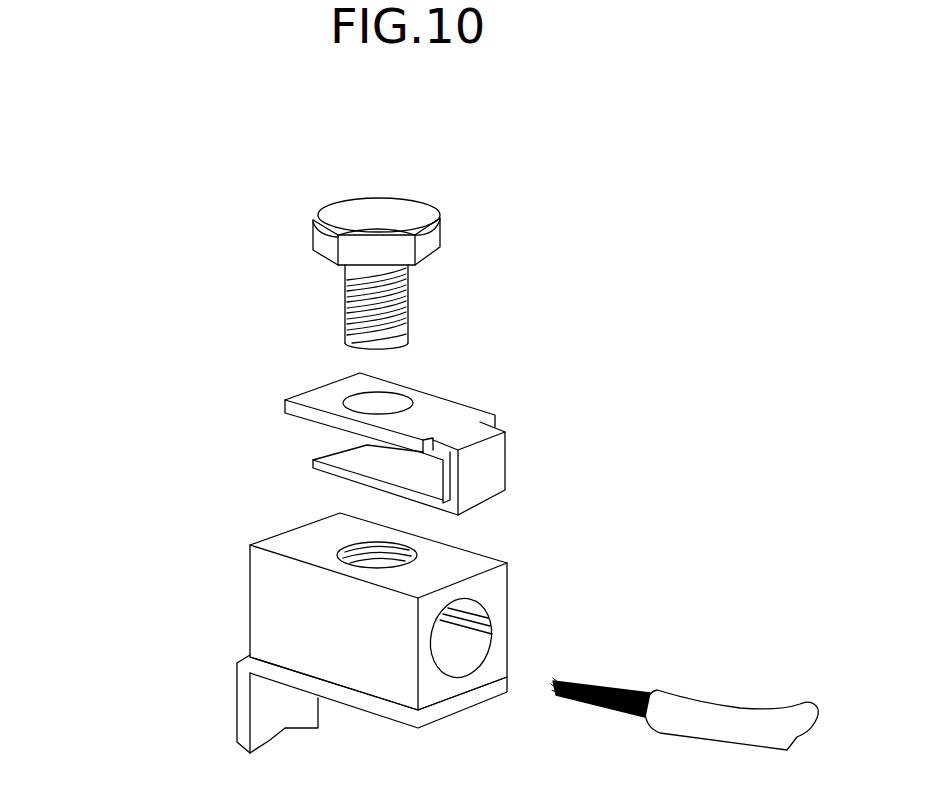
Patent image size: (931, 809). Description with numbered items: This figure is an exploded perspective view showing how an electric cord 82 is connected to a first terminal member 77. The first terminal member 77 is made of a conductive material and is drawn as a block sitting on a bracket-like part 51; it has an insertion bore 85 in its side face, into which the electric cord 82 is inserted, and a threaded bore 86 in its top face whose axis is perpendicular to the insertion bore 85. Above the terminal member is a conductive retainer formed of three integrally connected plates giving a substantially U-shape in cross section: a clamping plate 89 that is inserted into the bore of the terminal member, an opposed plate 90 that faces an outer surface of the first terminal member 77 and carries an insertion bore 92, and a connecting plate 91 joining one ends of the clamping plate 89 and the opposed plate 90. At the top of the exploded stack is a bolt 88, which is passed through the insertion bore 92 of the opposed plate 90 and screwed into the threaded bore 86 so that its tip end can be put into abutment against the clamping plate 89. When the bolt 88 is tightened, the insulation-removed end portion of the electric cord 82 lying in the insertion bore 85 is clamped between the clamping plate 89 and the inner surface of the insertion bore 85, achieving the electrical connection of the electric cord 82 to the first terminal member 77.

The bolt 88 is at (385, 208).
The opposed plate 90 is at (452, 410).
The insertion bore 92 is at (353, 400).
The connecting plate 91 is at (488, 475).
The clamping plate 89 is at (337, 457).
The first terminal member 77 is at (257, 632).
The threaded bore 86 is at (402, 552).
The insertion bore 85 is at (452, 650).
The mounting bracket 51 is at (243, 693).
The electric cord 82 is at (717, 715).